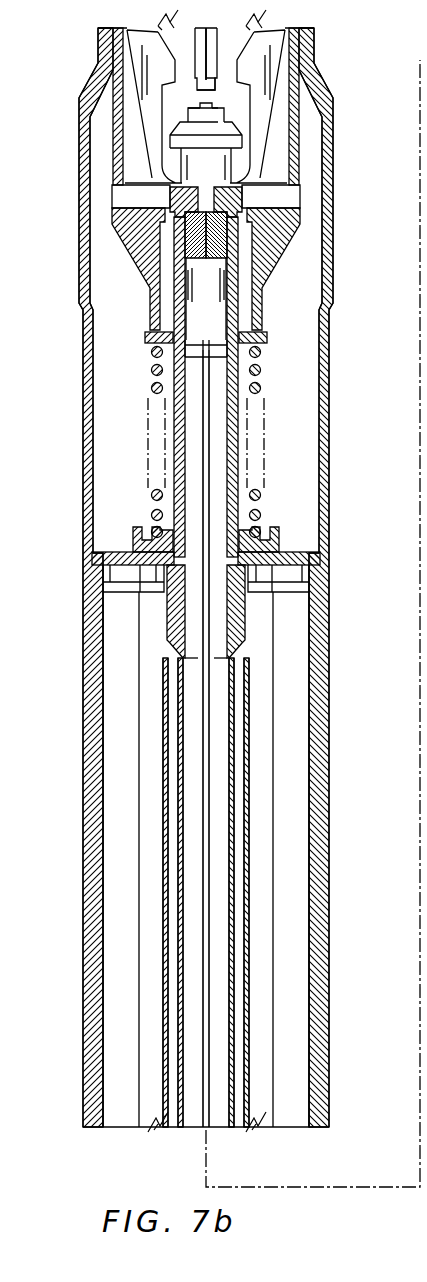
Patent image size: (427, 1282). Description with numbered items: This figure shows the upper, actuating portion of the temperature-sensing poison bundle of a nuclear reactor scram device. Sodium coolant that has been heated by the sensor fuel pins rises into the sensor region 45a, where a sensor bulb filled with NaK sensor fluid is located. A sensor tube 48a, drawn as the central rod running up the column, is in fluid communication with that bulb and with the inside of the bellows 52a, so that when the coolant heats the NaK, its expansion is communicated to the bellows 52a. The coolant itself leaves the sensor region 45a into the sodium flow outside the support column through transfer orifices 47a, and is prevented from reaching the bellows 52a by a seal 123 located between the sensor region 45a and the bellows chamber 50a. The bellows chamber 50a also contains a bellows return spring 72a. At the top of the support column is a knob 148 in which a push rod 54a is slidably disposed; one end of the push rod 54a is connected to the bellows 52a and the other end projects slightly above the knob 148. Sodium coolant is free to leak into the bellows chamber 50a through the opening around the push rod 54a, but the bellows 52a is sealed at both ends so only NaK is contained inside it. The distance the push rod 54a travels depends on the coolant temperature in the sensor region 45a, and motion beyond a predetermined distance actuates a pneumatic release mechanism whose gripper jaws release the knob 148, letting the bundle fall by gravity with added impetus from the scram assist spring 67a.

The knob 148 is at (243, 140).
The push rod 54a is at (230, 197).
The bellows return spring 72a is at (252, 243).
The bellows chamber 50a is at (222, 255).
The bellows 52a is at (227, 327).
The seal 123 is at (258, 350).
The transfer orifices 47a is at (238, 435).
The scram assist spring 67a is at (258, 490).
The sensor tube 48a is at (212, 614).
The sensor region 45a is at (225, 790).